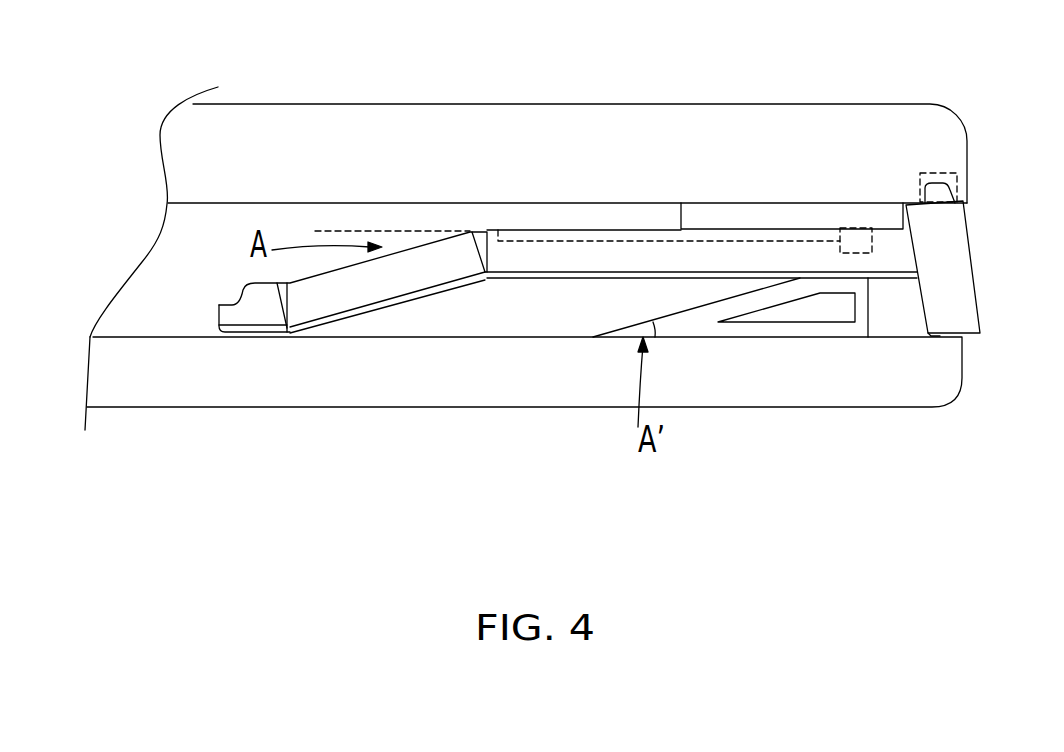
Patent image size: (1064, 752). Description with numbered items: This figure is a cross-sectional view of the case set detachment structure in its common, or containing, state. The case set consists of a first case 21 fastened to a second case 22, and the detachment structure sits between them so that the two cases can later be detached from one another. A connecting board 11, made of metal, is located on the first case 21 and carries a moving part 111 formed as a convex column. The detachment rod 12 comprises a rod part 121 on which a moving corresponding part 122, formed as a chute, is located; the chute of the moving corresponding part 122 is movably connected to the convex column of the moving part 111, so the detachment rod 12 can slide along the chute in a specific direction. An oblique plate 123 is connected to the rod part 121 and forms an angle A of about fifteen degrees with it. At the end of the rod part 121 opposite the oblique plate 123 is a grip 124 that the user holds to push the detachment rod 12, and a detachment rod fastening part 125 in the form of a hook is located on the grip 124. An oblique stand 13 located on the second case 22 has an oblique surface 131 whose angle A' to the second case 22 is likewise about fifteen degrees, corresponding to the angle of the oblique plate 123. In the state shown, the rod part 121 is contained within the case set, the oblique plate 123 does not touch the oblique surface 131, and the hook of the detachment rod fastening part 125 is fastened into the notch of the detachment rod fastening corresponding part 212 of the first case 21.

The connecting board 11 is at (770, 215).
The moving part 111 is at (858, 247).
The detachment rod 12 is at (508, 273).
The rod part 121 is at (525, 258).
The moving corresponding part 122 is at (578, 237).
The oblique plate 123 is at (420, 273).
The grip 124 is at (958, 295).
The detachment rod fastening part 125 is at (938, 187).
The oblique stand 13 is at (730, 381).
The oblique surface 131 is at (703, 305).
The first case 21 is at (412, 160).
The detachment rod fastening corresponding part 212 is at (938, 173).
The second case 22 is at (323, 363).